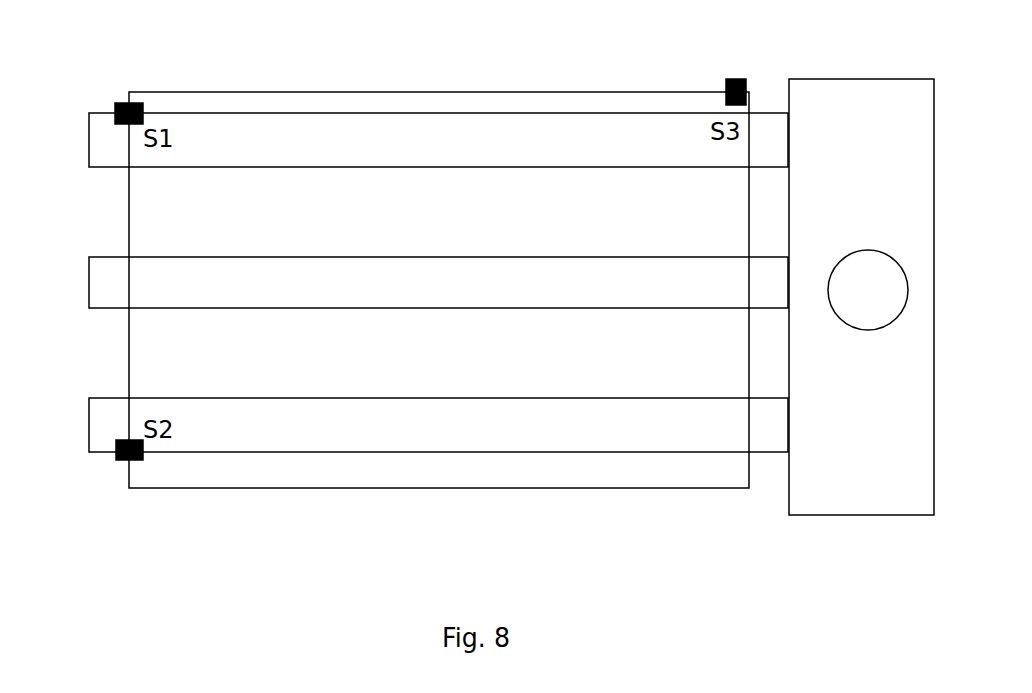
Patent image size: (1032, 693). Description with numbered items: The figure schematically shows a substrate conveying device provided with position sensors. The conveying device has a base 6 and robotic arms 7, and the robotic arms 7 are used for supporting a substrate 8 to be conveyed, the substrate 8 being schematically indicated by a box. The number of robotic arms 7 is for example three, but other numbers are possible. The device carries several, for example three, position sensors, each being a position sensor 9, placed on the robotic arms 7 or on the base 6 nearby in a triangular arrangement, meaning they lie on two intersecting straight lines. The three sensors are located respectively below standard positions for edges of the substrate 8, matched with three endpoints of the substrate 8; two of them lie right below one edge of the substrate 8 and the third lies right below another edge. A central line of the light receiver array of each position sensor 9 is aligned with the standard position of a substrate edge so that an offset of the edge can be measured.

The base 6 is at (828, 462).
The robotic arms 7 is at (117, 290).
The substrate 8 is at (274, 475).
The position sensor 9 is at (115, 103).